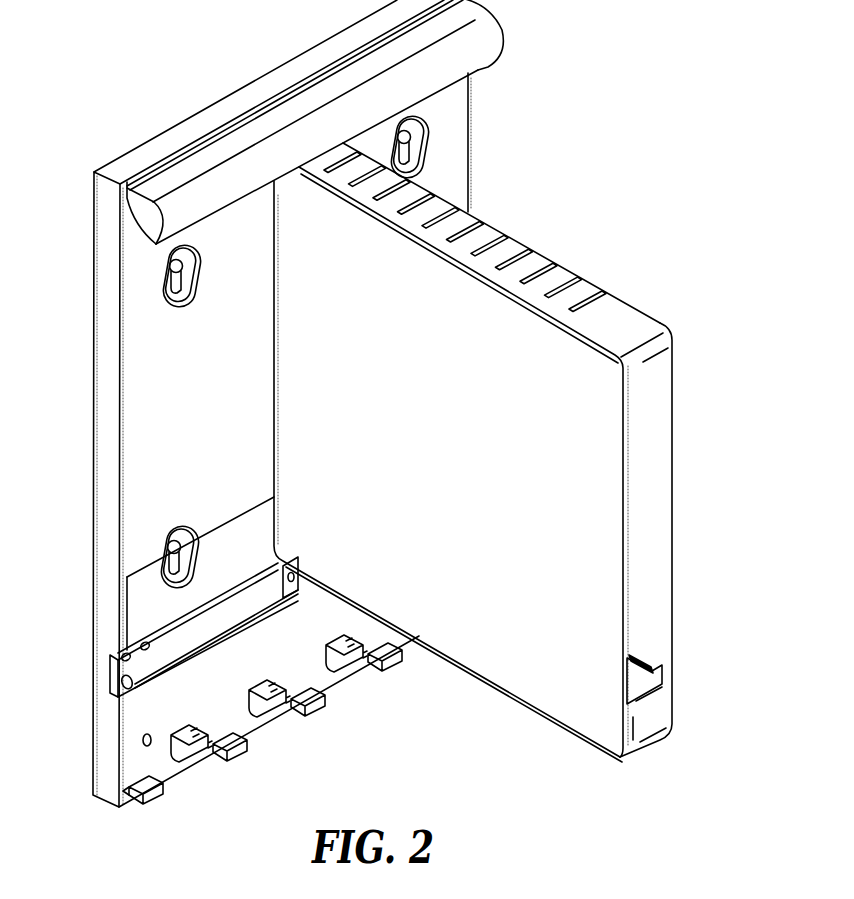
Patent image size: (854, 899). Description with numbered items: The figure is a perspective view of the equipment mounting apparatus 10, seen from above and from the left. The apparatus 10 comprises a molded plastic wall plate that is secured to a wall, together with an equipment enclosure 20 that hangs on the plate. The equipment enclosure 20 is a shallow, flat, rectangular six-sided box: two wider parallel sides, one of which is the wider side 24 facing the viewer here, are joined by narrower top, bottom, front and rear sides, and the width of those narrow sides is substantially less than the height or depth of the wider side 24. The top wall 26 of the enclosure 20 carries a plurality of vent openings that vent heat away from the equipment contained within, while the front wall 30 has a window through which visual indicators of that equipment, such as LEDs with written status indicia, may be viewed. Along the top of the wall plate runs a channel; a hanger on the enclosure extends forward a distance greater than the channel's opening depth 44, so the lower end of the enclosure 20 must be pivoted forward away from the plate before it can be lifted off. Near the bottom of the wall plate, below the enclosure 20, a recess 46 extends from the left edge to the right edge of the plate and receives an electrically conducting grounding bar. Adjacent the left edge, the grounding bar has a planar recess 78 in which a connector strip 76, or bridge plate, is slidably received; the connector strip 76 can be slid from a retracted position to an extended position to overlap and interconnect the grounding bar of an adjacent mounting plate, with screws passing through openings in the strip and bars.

The equipment mounting apparatus 10 is at (376, 403).
The equipment enclosure 20 is at (505, 470).
The wider side 24 is at (478, 505).
The top wall 26 is at (628, 322).
The front wall 30 is at (662, 707).
The opening depth 44 is at (154, 237).
The recess 46 is at (110, 683).
The connector strip 76 is at (113, 655).
The planar recess 78 is at (156, 600).